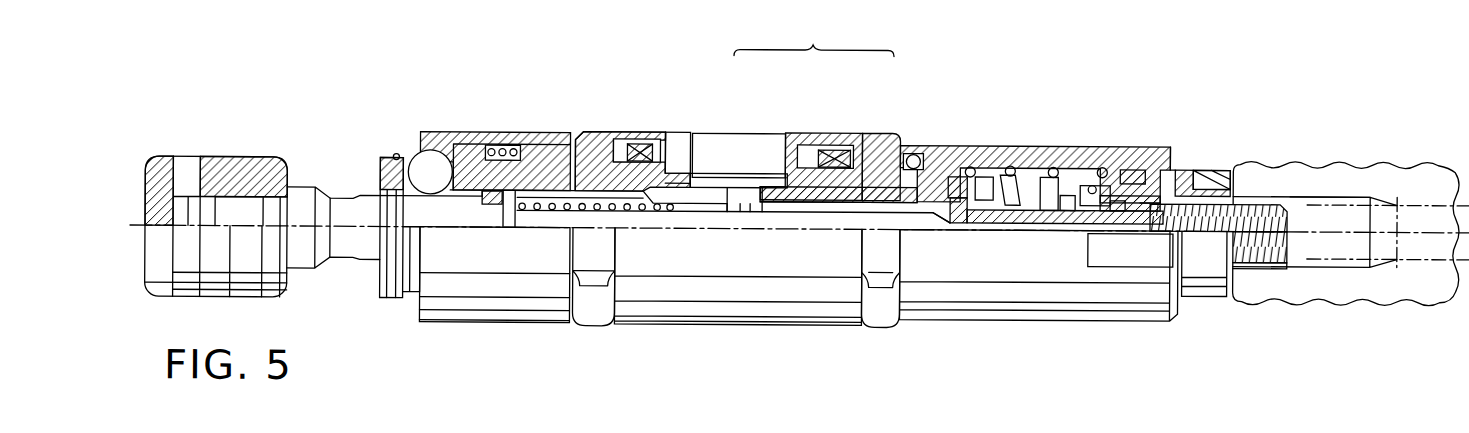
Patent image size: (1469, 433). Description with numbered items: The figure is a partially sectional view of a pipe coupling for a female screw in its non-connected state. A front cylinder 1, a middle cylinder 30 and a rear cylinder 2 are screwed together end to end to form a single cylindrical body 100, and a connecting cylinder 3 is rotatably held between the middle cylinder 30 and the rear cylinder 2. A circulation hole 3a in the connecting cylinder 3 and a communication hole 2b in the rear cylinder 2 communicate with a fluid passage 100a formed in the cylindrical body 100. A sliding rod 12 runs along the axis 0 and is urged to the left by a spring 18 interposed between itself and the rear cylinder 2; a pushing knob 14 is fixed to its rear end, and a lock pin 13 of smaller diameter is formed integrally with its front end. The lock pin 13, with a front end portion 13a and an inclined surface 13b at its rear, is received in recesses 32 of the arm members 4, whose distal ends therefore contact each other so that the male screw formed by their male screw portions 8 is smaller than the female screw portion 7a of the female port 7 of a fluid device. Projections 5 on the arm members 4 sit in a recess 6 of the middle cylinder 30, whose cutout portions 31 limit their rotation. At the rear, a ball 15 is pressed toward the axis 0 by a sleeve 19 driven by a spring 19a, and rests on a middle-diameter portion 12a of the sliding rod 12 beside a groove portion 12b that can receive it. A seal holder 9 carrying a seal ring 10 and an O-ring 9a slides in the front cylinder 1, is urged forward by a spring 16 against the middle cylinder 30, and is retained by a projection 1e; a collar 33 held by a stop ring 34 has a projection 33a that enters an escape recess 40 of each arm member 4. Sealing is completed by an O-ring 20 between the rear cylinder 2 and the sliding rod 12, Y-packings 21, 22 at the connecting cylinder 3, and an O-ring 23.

The cylindrical body 100 is at (825, 111).
The fluid passage 100a is at (790, 205).
The front cylinder 1 is at (910, 130).
The projection 1e is at (1167, 162).
The rear cylinder 2 is at (692, 185).
The communication hole 2b is at (738, 200).
The connecting cylinder 3 is at (666, 132).
The circulation hole 3a is at (752, 140).
The arm members 4 is at (1210, 228).
The projections 5 is at (968, 222).
The recess 6 is at (968, 170).
The female port 7 is at (1355, 165).
The female screw portion 7a is at (1297, 190).
The male screw portions 8 is at (1262, 265).
The seal holder 9 is at (1192, 170).
The O-ring 9a is at (1132, 164).
The seal ring 10 is at (1221, 170).
The sliding rod 12 is at (847, 226).
The middle-diameter portion 12a is at (392, 200).
The groove portion 12b is at (347, 232).
The lock pin 13 is at (1000, 225).
The front end portion 13a is at (1140, 207).
The inclined surface 13b is at (938, 228).
The pushing knob 14 is at (258, 160).
The ball 15 is at (422, 165).
The spring 16 is at (1003, 160).
The spring 18 is at (627, 212).
The sleeve 19 is at (461, 138).
The spring 19a is at (505, 144).
The O-ring 20 is at (493, 212).
The Y-packing 21 is at (642, 140).
The Y-packing 22 is at (836, 146).
The O-ring 23 is at (928, 150).
The middle cylinder 30 is at (880, 133).
The cutout portions 31 is at (1022, 170).
The recesses 32 is at (1078, 220).
The collar 33 is at (1110, 155).
The projection 33a is at (1122, 205).
The stop ring 34 is at (1074, 150).
The escape recess 40 is at (1065, 207).
The axis 0 is at (700, 234).